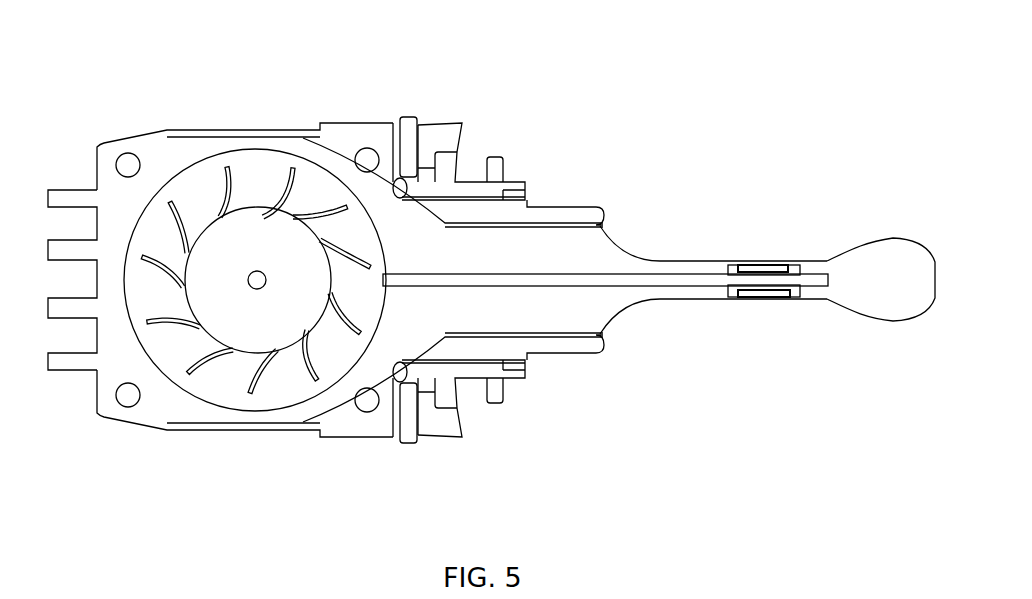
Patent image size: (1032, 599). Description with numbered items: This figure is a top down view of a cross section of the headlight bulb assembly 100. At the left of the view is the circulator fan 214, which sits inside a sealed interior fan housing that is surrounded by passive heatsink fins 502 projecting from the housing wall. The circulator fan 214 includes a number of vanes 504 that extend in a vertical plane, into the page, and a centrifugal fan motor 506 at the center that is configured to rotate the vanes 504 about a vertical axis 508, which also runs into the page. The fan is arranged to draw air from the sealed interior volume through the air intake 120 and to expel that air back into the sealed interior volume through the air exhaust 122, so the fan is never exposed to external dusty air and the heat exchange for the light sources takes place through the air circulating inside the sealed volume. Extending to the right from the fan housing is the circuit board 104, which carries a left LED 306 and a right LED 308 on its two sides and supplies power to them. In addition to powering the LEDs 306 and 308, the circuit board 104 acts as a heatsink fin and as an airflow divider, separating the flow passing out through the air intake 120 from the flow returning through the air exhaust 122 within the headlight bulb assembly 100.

The headlight bulb assembly 100 is at (533, 54).
The circuit board 104 is at (560, 273).
The air intake 120 is at (631, 238).
The air exhaust 122 is at (630, 321).
The circulator fan 214 is at (207, 227).
The left LED 306 is at (758, 263).
The right LED 308 is at (755, 298).
The passive heatsink fins 502 is at (73, 385).
The vanes 504 is at (349, 322).
The centrifugal fan motor 506 is at (276, 318).
The vertical axis 508 is at (263, 276).